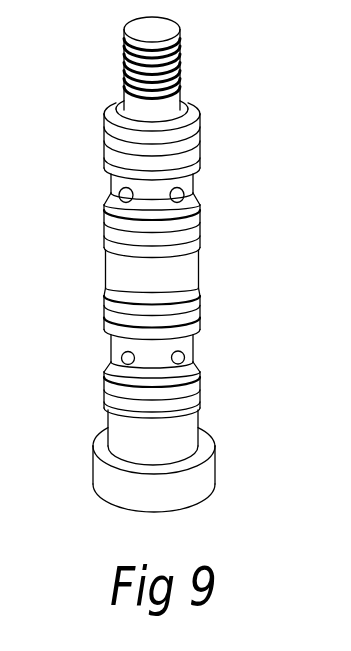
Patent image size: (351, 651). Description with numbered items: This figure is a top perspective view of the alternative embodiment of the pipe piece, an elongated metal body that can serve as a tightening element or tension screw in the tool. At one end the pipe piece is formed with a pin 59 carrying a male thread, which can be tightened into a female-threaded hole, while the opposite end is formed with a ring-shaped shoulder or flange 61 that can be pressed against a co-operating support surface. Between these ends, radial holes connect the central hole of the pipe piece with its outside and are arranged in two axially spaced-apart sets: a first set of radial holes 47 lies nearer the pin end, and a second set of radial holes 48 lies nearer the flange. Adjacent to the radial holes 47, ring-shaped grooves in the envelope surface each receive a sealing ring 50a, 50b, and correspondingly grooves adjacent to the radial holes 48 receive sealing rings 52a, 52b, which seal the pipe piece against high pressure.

The pin 59 is at (183, 89).
The sealing ring 50a is at (202, 146).
The sealing ring 50b is at (202, 207).
The radial holes 47 is at (127, 194).
The radial holes 48 is at (127, 362).
The sealing ring 52b is at (203, 312).
The sealing ring 52a is at (203, 374).
The flange 61 is at (207, 479).